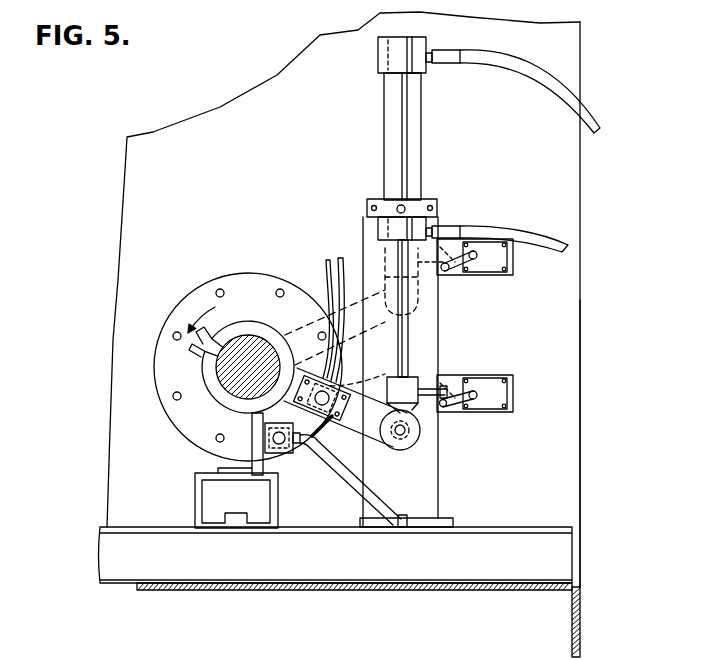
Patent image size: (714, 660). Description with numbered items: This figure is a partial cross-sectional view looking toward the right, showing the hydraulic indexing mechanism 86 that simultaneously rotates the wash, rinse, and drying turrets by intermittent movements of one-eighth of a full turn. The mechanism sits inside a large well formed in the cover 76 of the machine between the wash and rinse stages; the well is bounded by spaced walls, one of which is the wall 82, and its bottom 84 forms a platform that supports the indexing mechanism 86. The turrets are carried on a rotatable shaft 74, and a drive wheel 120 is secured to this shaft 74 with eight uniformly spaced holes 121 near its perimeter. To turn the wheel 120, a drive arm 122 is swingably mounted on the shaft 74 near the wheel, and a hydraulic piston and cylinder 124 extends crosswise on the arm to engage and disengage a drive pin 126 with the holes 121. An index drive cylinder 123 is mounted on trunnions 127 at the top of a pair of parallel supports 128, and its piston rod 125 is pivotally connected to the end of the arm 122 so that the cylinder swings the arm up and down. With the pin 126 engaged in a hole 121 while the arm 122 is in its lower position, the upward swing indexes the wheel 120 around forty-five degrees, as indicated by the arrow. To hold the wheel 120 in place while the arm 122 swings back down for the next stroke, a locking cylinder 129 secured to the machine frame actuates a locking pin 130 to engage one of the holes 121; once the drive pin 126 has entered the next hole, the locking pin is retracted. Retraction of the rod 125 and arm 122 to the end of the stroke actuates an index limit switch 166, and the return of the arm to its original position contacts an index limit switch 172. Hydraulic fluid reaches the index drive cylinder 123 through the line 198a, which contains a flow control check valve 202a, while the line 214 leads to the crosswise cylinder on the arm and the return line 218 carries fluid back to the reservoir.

The indexing mechanism 86 is at (205, 192).
The cover 76 is at (580, 47).
The wall 82 is at (567, 415).
The bottom 84 is at (547, 596).
The index drive cylinder 123 is at (425, 143).
The line 198a is at (533, 72).
The trunnions 127 is at (404, 210).
The flow control check valve 202a is at (526, 233).
The index limit switch 166 is at (497, 276).
The index limit switch 172 is at (490, 406).
The piston rod 125 is at (410, 338).
The parallel supports 128 is at (432, 478).
The hydraulic piston and cylinder 124 is at (376, 371).
The drive arm 122 is at (374, 438).
The drive pin 126 is at (346, 411).
The drive wheel 120 is at (190, 302).
The holes 121 is at (223, 289).
The rotatable shaft 74 is at (250, 335).
The line 214 is at (326, 262).
The return line 218 is at (340, 258).
The locking pin 130 is at (317, 431).
The locking cylinder 129 is at (287, 457).